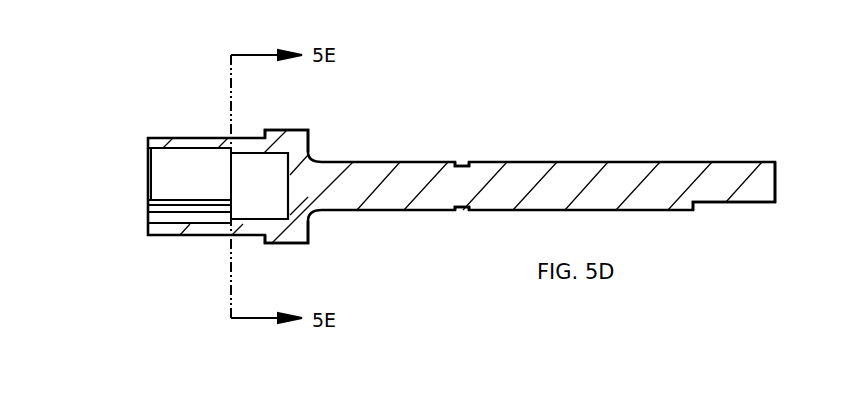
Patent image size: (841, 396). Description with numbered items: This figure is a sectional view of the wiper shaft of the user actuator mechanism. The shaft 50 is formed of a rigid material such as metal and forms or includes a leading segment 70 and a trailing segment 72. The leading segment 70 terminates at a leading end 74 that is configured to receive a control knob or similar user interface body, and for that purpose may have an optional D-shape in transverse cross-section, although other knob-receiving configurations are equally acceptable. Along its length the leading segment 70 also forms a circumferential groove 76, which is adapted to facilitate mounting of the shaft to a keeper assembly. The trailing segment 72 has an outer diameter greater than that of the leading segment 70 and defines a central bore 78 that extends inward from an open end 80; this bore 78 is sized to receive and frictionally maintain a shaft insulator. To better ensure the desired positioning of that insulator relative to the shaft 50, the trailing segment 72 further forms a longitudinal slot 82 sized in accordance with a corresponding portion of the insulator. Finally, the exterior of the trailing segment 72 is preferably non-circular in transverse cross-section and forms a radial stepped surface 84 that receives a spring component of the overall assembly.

The shaft 50 is at (521, 133).
The leading segment 70 is at (547, 216).
The trailing segment 72 is at (178, 130).
The leading end 74 is at (750, 204).
The circumferential groove 76 is at (462, 212).
The central bore 78 is at (168, 152).
The open end 80 is at (148, 223).
The longitudinal slot 82 is at (150, 209).
The radial stepped surface 84 is at (268, 134).